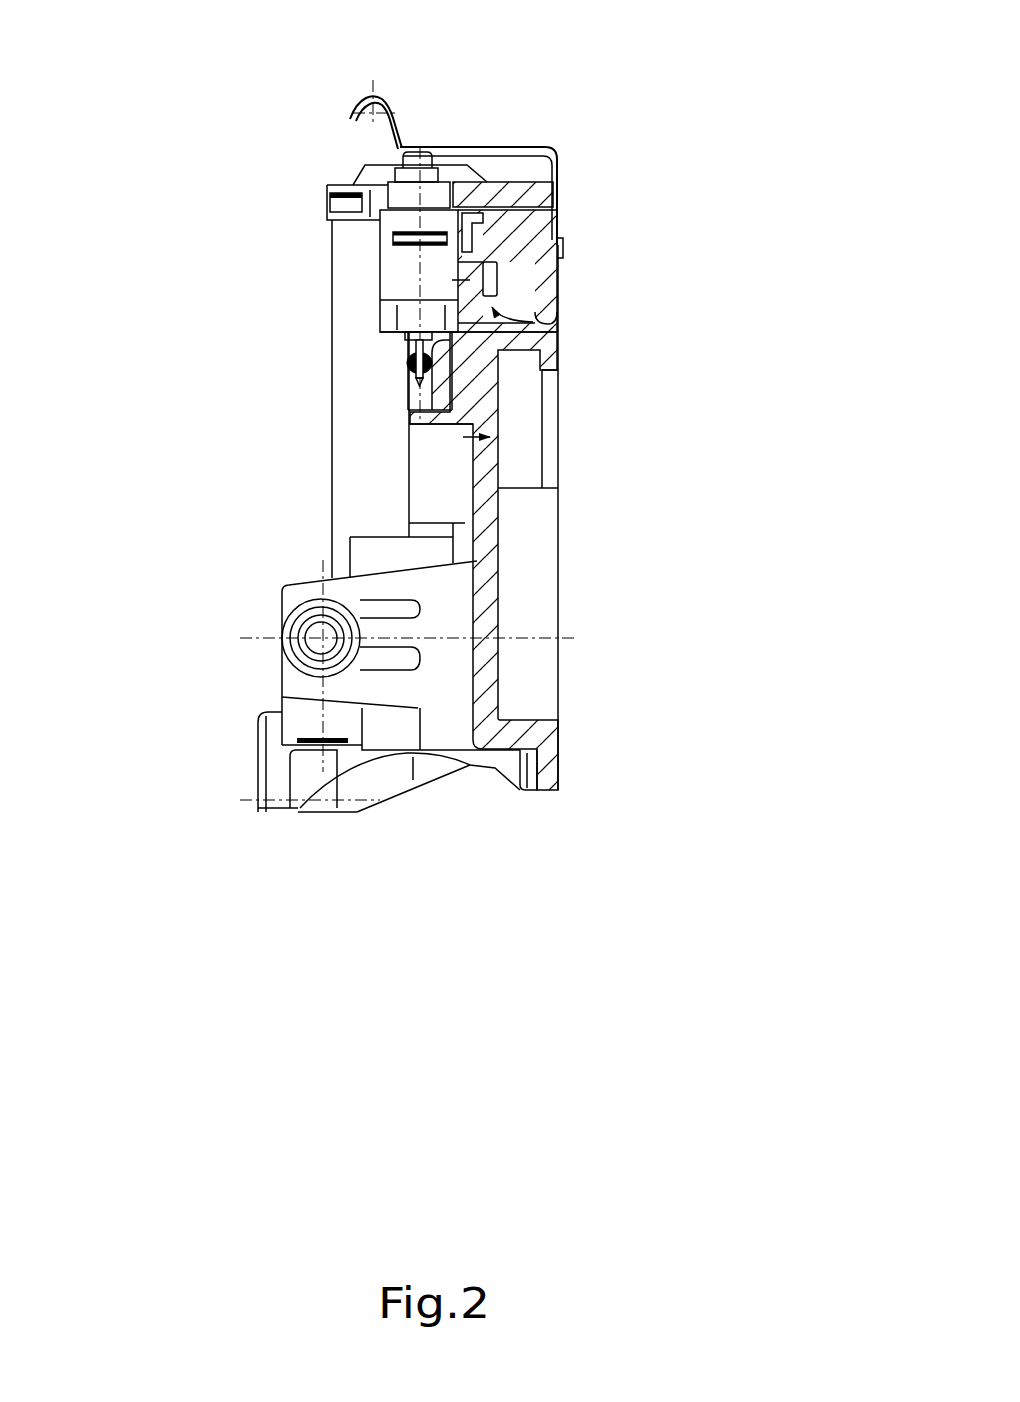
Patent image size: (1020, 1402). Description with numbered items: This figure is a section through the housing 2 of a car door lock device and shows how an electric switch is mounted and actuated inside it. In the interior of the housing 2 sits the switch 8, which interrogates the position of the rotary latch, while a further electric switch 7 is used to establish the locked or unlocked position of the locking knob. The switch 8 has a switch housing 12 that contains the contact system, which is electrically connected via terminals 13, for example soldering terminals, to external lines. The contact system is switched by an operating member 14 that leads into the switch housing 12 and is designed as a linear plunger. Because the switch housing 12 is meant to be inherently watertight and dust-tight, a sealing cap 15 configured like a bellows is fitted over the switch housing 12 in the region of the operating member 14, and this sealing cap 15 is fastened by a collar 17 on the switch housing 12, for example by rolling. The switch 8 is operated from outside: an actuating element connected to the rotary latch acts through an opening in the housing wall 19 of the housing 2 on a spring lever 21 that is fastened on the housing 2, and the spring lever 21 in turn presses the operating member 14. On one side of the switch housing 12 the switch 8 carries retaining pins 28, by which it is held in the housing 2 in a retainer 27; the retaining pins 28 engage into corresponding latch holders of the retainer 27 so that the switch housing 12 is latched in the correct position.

The housing 2 is at (488, 457).
The electric switch 7 is at (312, 719).
The electric switch 8 is at (400, 278).
The switch housing 12 is at (413, 292).
The terminals 13 is at (402, 355).
The operating member 14 is at (417, 160).
The sealing cap 15 is at (410, 191).
The collar 17 is at (435, 218).
The housing wall 19 is at (508, 222).
The spring lever 21 is at (397, 120).
The retainer 27 is at (548, 321).
The retaining pins 28 is at (497, 270).